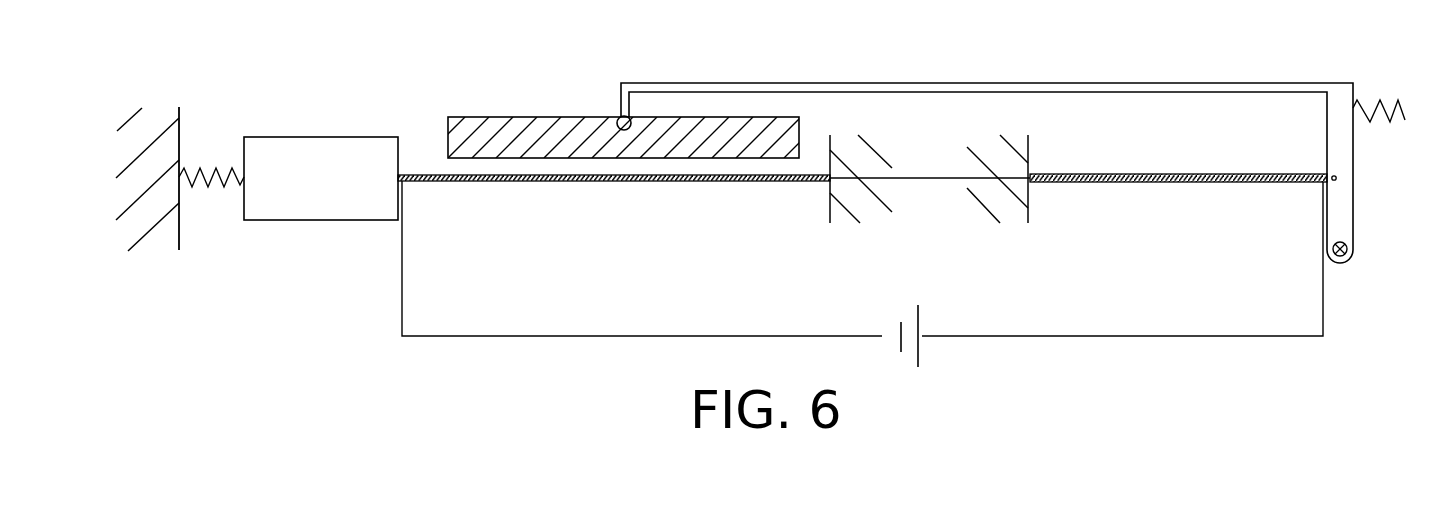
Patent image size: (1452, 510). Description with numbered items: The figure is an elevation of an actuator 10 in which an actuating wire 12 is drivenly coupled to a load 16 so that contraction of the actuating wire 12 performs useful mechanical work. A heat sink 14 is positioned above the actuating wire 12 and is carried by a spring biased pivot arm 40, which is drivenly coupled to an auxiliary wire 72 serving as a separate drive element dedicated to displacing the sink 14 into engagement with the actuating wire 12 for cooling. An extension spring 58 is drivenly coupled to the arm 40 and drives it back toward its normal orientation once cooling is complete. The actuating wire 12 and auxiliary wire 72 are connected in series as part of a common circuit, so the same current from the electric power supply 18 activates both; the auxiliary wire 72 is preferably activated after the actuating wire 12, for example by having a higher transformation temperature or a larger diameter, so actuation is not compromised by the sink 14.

The actuator 10 is at (363, 372).
The actuating wire 12 is at (587, 181).
The heat sink 14 is at (515, 117).
The load 16 is at (337, 184).
The electric power supply 18 is at (950, 366).
The pivot arm 40 is at (1230, 70).
The extension spring 58 is at (1393, 103).
The auxiliary shape memory alloy wire 72 is at (1170, 183).